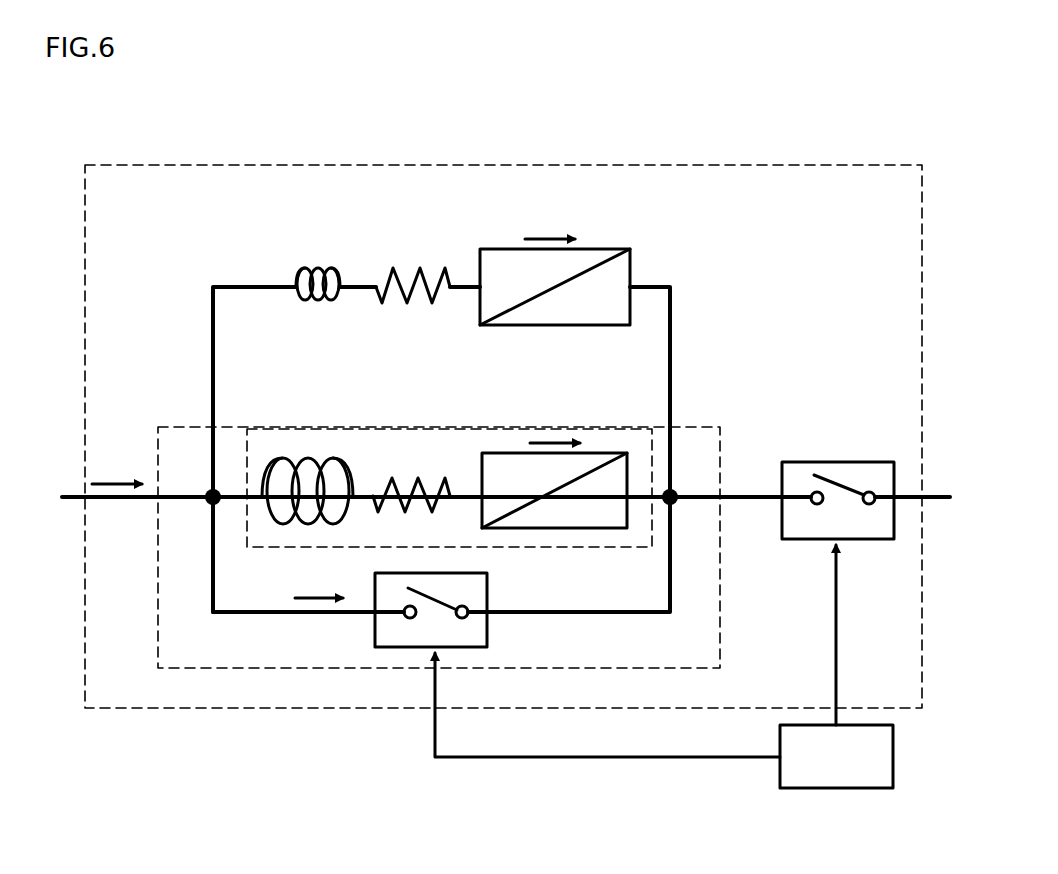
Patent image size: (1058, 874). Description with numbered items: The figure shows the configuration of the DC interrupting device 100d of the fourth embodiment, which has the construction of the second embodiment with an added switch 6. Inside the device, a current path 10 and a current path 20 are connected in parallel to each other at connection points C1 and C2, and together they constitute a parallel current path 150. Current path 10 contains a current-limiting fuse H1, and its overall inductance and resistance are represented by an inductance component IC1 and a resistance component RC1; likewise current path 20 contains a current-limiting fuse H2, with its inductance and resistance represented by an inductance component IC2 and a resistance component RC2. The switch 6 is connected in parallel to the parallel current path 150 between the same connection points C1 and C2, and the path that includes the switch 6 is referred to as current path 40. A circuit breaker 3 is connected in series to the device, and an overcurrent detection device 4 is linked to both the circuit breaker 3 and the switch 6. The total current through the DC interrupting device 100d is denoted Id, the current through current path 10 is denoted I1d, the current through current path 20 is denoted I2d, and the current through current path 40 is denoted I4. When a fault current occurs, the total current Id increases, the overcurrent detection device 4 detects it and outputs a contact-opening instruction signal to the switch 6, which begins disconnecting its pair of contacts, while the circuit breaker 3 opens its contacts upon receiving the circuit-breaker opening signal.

The DC interrupting device 100d is at (193, 165).
The current path 10 is at (438, 255).
The current path 20 is at (449, 445).
The parallel current path 150 is at (778, 258).
The current path 40 is at (411, 547).
The switch 6 is at (489, 630).
The circuit breaker 3 is at (834, 461).
The overcurrent detection device 4 is at (838, 792).
The connection point C1 is at (208, 492).
The connection point C2 is at (674, 492).
The inductance component IC1 is at (316, 268).
The inductance component IC2 is at (296, 455).
The resistance component RC1 is at (391, 268).
The resistance component RC2 is at (410, 476).
The current-limiting fuse H1 is at (501, 247).
The current-limiting fuse H2 is at (496, 452).
The total current Id is at (117, 482).
The current I1d is at (550, 212).
The current I2d is at (555, 416).
The current I4 is at (309, 580).